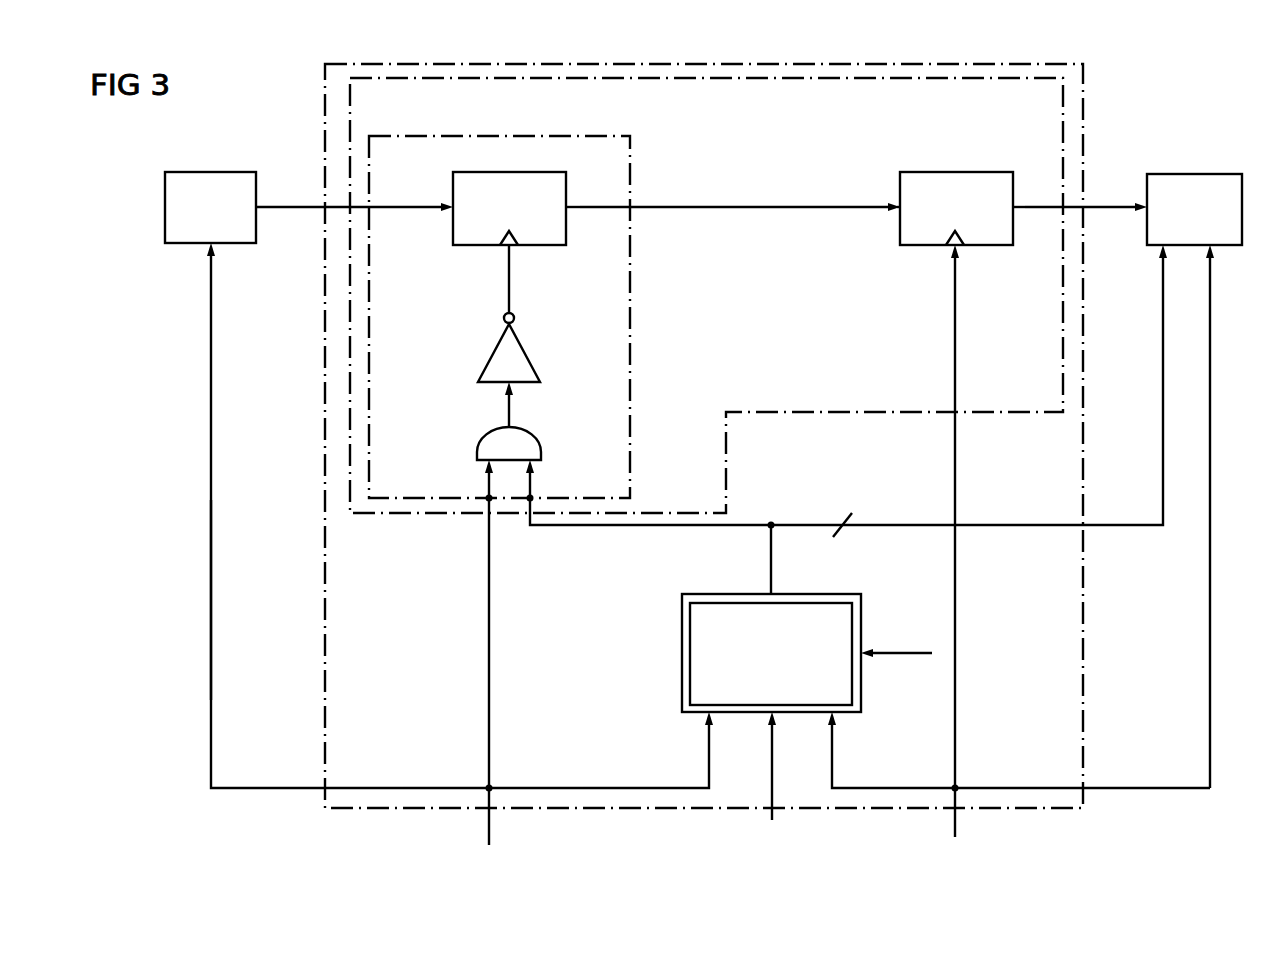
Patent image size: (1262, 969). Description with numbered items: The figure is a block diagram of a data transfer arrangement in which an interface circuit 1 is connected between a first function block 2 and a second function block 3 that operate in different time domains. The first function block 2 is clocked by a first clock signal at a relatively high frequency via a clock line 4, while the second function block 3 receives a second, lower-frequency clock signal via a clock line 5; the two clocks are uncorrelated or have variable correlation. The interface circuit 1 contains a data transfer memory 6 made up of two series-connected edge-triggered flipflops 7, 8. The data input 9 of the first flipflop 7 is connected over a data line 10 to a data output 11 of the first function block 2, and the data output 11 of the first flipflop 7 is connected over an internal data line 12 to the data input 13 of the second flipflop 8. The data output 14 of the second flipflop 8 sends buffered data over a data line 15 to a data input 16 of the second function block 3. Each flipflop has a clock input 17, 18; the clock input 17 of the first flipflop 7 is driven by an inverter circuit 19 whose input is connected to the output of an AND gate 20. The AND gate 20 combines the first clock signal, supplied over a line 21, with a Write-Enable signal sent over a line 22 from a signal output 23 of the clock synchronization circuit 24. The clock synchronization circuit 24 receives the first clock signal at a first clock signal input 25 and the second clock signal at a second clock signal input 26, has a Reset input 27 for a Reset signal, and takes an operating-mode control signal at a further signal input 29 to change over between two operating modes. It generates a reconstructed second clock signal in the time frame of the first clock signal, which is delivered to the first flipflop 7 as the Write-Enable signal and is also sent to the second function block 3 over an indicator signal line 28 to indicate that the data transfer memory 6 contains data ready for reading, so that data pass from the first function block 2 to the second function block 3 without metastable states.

The interface circuit 1 is at (752, 436).
The first function block 2 is at (210, 207).
The second function block 3 is at (1194, 209).
The clock line 4 is at (213, 617).
The clock line 5 is at (1211, 432).
The data transfer memory 6 is at (706, 295).
The first edge-triggered flipflop 7 is at (569, 210).
The second edge-triggered flipflop 8 is at (897, 188).
The data input 9 is at (449, 215).
The data line 10 is at (413, 205).
The data output 11 is at (256, 210).
The internal data line 12 is at (798, 205).
The data input 13 is at (897, 212).
The data output 14 is at (1014, 210).
The data line 15 is at (1032, 205).
The data input 16 is at (1145, 205).
The clock input 17 is at (514, 248).
The clock input 18 is at (960, 250).
The inverter circuit 19 is at (537, 368).
The AND gate 20 is at (541, 446).
The line 21 is at (491, 660).
The line 22 is at (623, 526).
The signal output 23 is at (768, 590).
The clock synchronization circuit 24 is at (771, 653).
The first clock signal input 25 is at (705, 716).
The second clock signal input 26 is at (835, 716).
The Reset input 27 is at (862, 657).
The indicator signal line 28 is at (985, 527).
The further signal input 29 is at (775, 716).